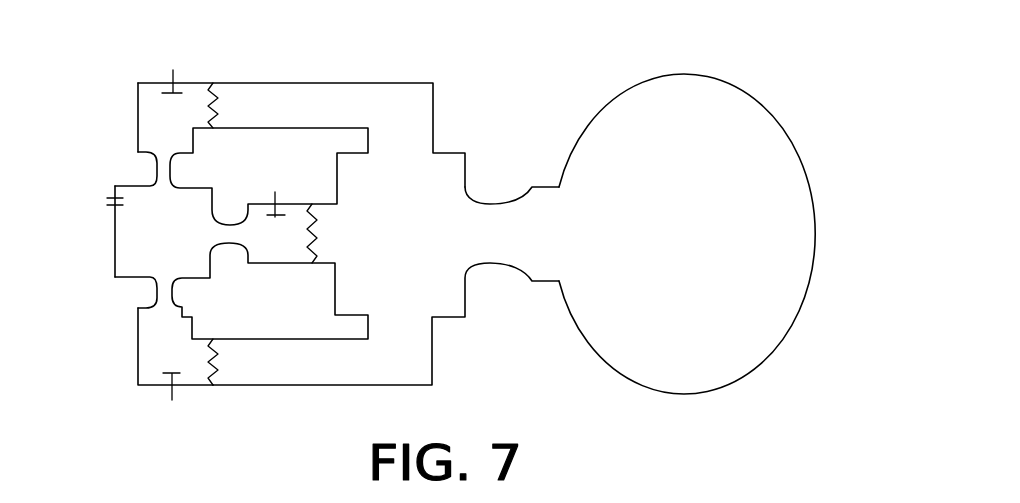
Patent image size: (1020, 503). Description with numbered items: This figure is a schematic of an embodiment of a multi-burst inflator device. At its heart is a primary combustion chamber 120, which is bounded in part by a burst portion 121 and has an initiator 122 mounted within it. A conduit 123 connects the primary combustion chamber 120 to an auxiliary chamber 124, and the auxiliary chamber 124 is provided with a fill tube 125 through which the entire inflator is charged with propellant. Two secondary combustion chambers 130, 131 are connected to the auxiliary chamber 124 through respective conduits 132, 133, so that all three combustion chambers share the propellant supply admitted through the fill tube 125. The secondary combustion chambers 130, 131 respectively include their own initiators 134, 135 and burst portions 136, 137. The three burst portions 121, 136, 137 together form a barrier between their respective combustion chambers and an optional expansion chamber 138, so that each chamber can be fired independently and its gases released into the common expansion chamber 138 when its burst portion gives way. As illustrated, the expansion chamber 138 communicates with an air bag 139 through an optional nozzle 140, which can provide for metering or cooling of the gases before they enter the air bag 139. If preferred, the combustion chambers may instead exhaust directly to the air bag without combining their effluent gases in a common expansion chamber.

The primary combustion chamber 120 is at (277, 242).
The burst portion 121 is at (322, 238).
The initiator 122 is at (297, 213).
The conduit 123 is at (228, 224).
The auxiliary chamber 124 is at (163, 232).
The fill tube 125 is at (112, 199).
The secondary combustion chamber 130 is at (157, 119).
The secondary combustion chamber 131 is at (160, 355).
The conduit 132 is at (157, 174).
The conduit 133 is at (147, 306).
The initiator 134 is at (178, 93).
The initiator 135 is at (166, 383).
The burst portion 136 is at (222, 103).
The burst portion 137 is at (215, 363).
The expansion chamber 138 is at (440, 253).
The air bag 139 is at (717, 255).
The nozzle 140 is at (497, 204).